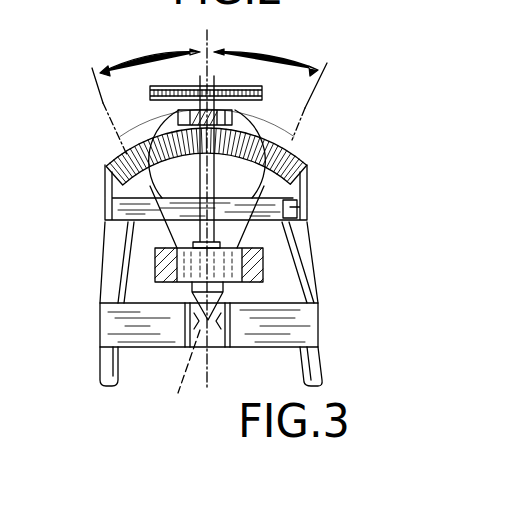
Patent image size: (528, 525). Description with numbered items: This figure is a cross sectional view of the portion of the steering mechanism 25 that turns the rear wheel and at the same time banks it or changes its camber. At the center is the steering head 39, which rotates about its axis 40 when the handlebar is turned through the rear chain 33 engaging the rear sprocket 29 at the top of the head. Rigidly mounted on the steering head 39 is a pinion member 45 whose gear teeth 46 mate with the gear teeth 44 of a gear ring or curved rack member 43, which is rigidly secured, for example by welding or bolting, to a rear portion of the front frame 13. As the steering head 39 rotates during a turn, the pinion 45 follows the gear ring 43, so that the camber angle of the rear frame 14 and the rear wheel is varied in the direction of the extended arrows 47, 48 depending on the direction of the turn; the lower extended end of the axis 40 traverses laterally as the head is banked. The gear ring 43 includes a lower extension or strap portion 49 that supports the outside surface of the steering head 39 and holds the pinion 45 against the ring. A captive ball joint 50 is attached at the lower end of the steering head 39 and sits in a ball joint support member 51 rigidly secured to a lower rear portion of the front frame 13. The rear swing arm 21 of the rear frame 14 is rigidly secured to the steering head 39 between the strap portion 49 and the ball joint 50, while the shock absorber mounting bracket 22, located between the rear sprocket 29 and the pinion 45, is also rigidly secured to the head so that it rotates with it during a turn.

The front frame 13 is at (324, 366).
The rear frame 14 is at (281, 282).
The rear swing arm 21 is at (265, 262).
The shock absorber mounting bracket 22 is at (232, 117).
The steering mechanism 25 is at (400, 143).
The rear sprocket 29 is at (228, 76).
The rear chain 33 is at (160, 86).
The steering head 39 is at (199, 188).
The axis 40 is at (208, 66).
The gear ring or curved rack member 43 is at (244, 135).
The gear teeth 44 is at (297, 146).
The pinion member 45 is at (164, 129).
The gear teeth 46 is at (293, 152).
The arrow 47 is at (122, 62).
The arrow 48 is at (295, 62).
The lower extension or strap portion 49 is at (297, 208).
The captive ball joint 50 is at (194, 352).
The ball joint support member 51 is at (244, 346).